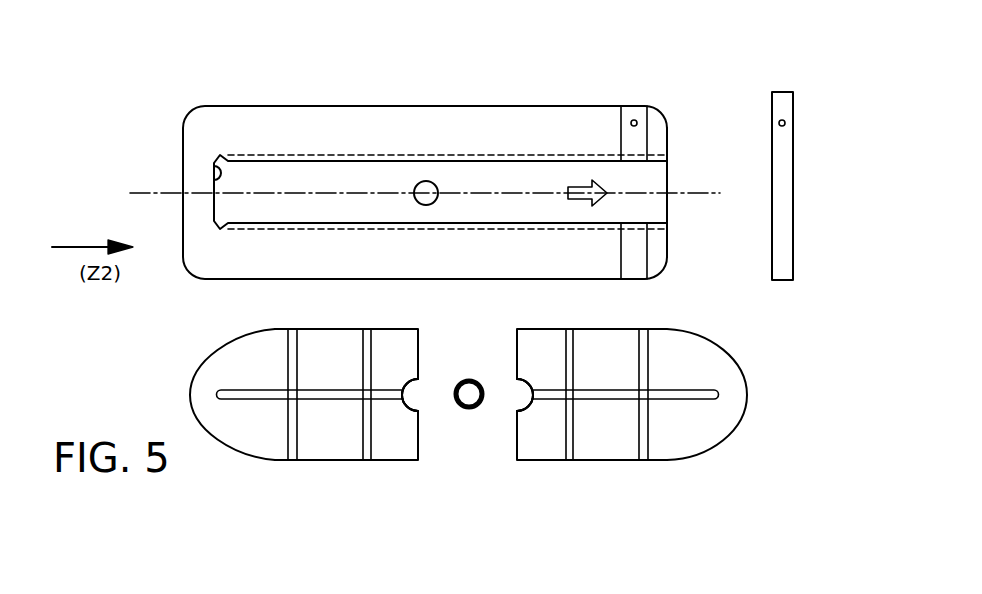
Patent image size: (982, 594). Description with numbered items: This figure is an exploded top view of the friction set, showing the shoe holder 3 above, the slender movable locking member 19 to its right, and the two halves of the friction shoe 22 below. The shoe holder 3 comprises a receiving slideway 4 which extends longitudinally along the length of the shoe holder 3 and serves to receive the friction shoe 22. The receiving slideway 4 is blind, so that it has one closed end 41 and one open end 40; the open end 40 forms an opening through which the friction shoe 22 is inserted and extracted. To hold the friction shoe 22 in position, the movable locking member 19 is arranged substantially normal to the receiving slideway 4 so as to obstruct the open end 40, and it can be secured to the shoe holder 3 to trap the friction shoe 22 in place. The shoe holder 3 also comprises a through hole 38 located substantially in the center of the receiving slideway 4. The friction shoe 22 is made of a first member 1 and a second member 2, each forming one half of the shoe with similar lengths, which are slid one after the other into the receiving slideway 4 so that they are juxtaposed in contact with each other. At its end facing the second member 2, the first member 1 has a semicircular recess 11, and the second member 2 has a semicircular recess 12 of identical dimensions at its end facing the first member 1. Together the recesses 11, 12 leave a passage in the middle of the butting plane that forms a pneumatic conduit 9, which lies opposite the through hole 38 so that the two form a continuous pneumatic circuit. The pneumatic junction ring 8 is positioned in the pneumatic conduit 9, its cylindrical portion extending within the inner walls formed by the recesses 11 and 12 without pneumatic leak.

The first member 1 is at (612, 462).
The second member 2 is at (338, 462).
The shoe holder 3 is at (190, 112).
The receiving slideway 4 is at (262, 158).
The pneumatic junction ring 8 is at (467, 378).
The pneumatic conduit 9 is at (425, 476).
The recess 11 is at (408, 383).
The recess 12 is at (528, 383).
The movable locking member 19 is at (796, 104).
The friction shoe 22 is at (262, 428).
The through hole 38 is at (428, 182).
The open end 40 is at (668, 208).
The closed end 41 is at (214, 166).